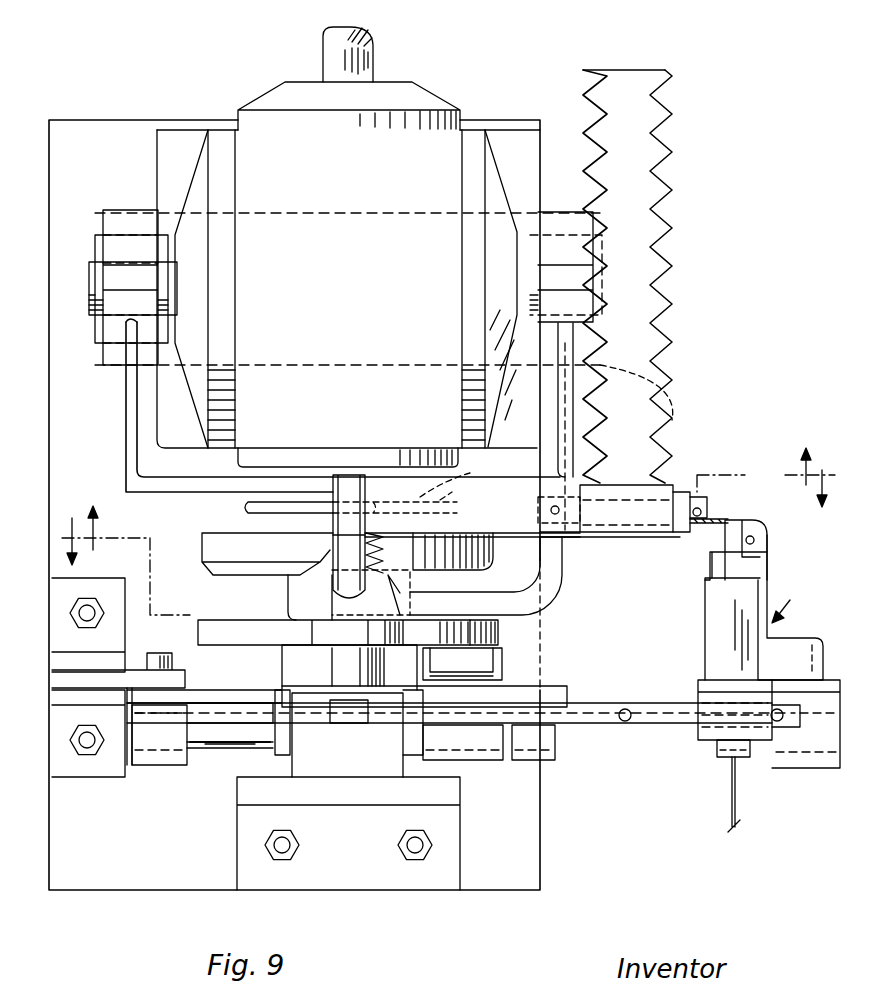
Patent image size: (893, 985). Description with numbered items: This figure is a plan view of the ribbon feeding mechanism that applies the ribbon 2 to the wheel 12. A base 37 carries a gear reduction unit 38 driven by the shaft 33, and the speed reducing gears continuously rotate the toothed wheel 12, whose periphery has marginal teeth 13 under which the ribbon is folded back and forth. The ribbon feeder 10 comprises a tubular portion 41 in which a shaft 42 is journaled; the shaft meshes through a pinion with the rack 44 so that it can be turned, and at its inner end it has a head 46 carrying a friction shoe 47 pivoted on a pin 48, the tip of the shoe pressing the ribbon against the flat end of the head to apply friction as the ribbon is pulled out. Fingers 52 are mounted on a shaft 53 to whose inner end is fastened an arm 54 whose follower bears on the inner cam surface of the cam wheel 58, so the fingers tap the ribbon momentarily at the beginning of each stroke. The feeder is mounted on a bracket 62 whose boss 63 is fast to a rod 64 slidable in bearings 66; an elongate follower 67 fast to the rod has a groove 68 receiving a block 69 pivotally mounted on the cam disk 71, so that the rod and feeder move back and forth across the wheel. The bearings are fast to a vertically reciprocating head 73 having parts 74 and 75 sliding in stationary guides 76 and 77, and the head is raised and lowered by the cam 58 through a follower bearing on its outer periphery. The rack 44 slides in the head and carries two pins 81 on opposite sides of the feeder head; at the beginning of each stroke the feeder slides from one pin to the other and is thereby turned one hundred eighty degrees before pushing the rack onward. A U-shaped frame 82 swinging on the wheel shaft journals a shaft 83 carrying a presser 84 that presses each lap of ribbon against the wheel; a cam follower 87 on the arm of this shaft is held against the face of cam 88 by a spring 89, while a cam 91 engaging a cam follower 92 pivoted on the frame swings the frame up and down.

The ribbon 2 is at (713, 518).
The ribbon feeder 10 is at (455, 565).
The wheel 12 is at (665, 228).
The marginal teeth 13 is at (672, 292).
The shaft 33 is at (378, 58).
The base 37 is at (540, 852).
The gear reduction unit 38 is at (435, 100).
The tubular portion 41 is at (698, 688).
The shaft 42 is at (724, 748).
The rack 44 is at (667, 725).
The head 46 is at (714, 566).
The friction shoe 47 is at (747, 520).
The pin 48 is at (767, 543).
The fingers 52 is at (688, 510).
The shaft 53 is at (706, 500).
The arm 54 is at (560, 586).
The cam wheel 58 is at (500, 632).
The bracket 62 is at (792, 640).
The boss 63 is at (822, 768).
The rod 64 is at (225, 745).
The bearings 66 is at (172, 765).
The elongate follower 67 is at (488, 760).
The groove 68 is at (486, 668).
The block 69 is at (486, 658).
The cam disk 71 is at (115, 700).
The head 73 is at (282, 676).
The part 74 is at (360, 725).
The part 75 is at (138, 670).
The stationary guide 76 is at (321, 725).
The stationary guide 77 is at (318, 636).
The pins 81 is at (625, 722).
The U-shaped frame 82 is at (126, 395).
The shaft 83 is at (613, 528).
The presser 84 is at (636, 540).
The cam follower 87 is at (344, 578).
The cam 88 is at (258, 575).
The spring 89 is at (442, 536).
The cam 91 is at (447, 502).
The cam follower 92 is at (322, 512).